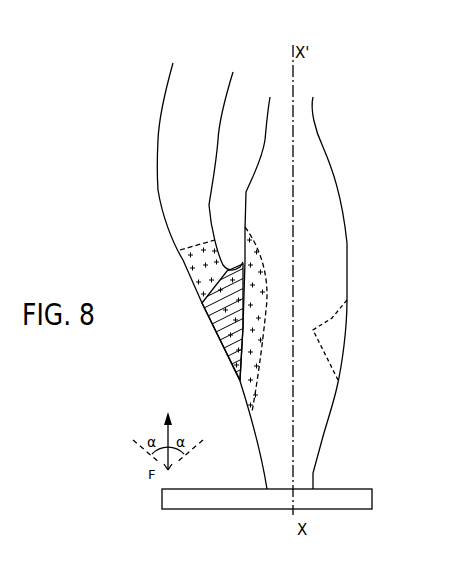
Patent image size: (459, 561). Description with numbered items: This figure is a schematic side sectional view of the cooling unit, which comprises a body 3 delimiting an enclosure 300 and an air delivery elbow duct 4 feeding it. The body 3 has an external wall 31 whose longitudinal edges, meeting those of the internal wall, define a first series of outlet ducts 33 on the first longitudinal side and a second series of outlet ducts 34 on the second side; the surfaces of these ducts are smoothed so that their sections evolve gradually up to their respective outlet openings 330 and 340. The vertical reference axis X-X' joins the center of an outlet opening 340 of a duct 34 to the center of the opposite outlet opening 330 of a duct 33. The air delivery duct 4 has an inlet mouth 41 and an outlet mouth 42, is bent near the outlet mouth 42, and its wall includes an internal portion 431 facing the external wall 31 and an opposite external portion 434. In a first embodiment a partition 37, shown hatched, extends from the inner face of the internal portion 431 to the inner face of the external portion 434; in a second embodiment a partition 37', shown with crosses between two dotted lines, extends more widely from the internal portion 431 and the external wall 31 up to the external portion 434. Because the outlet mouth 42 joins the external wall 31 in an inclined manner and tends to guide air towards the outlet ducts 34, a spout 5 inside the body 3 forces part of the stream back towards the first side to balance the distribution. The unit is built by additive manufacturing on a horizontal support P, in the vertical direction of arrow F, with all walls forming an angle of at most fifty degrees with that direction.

The body 3 is at (325, 265).
The air delivery elbow duct 4 is at (175, 250).
The spout 5 is at (330, 320).
The external wall 31 is at (247, 187).
The outlet ducts of first series 33 is at (325, 147).
The outlet ducts of second series 34 is at (328, 425).
The partition 37 is at (201, 322).
The partition 37' is at (175, 268).
The inlet mouth 41 is at (202, 72).
The outlet mouth 42 is at (230, 342).
The enclosure 300 is at (323, 272).
The outlet opening 330 is at (303, 102).
The outlet opening 340 is at (307, 473).
The internal portion 431 is at (210, 205).
The external portion 434 is at (157, 183).
The horizontal support P is at (358, 500).